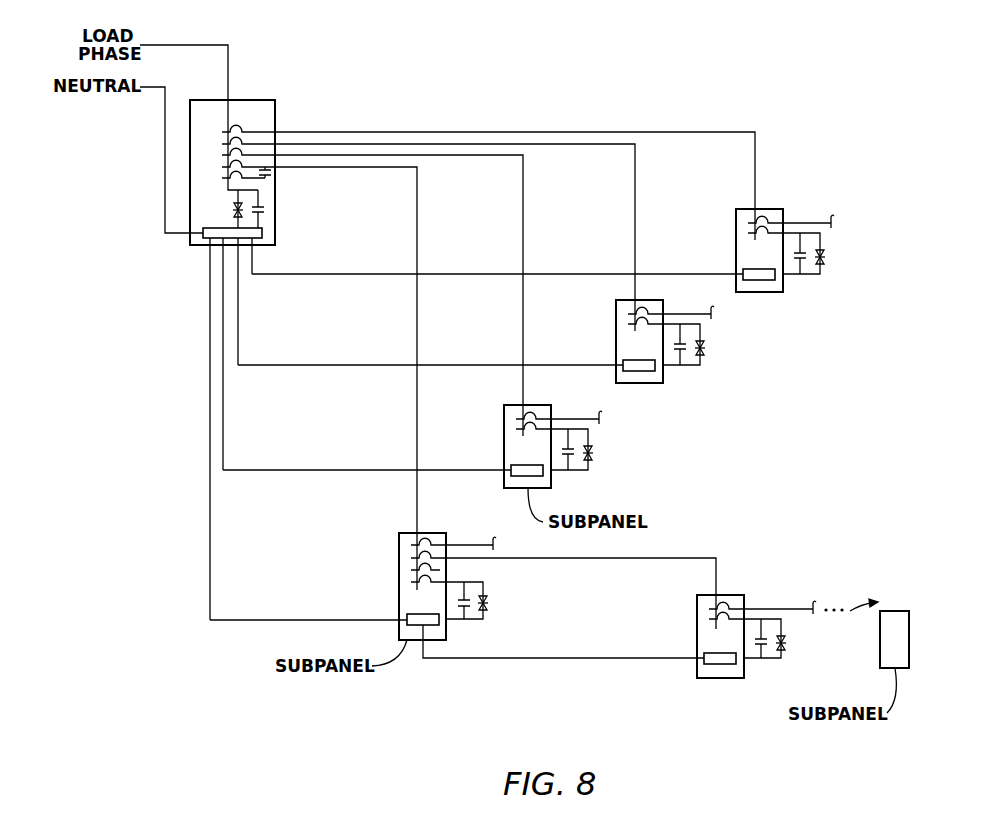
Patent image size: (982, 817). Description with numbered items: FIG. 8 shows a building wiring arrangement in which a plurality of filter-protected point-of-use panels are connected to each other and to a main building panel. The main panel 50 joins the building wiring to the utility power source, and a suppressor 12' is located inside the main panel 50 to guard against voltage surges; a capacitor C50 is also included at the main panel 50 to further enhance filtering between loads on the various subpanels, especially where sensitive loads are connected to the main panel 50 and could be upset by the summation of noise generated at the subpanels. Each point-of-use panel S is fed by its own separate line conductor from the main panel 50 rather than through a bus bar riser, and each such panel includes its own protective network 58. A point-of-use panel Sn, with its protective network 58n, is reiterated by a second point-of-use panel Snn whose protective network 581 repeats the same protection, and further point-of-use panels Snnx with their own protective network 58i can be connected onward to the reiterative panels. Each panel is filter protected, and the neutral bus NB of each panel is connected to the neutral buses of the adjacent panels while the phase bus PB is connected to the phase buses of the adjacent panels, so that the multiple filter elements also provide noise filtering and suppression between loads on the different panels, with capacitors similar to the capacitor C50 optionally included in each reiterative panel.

The main panel 50 is at (423, 336).
The capacitor C50 is at (268, 173).
The suppressor 12' is at (167, 209).
The protective network 58 is at (757, 293).
The protective network 58n is at (405, 581).
The protective network 581 is at (727, 595).
The protective network 58i is at (883, 648).
The point-of-use panel S is at (772, 209).
The point-of-use panel Sn is at (512, 578).
The second point-of-use panel Snn is at (755, 638).
The further point-of-use panel Snnx is at (863, 621).
The phase bus PB is at (705, 609).
The neutral bus NB is at (704, 660).